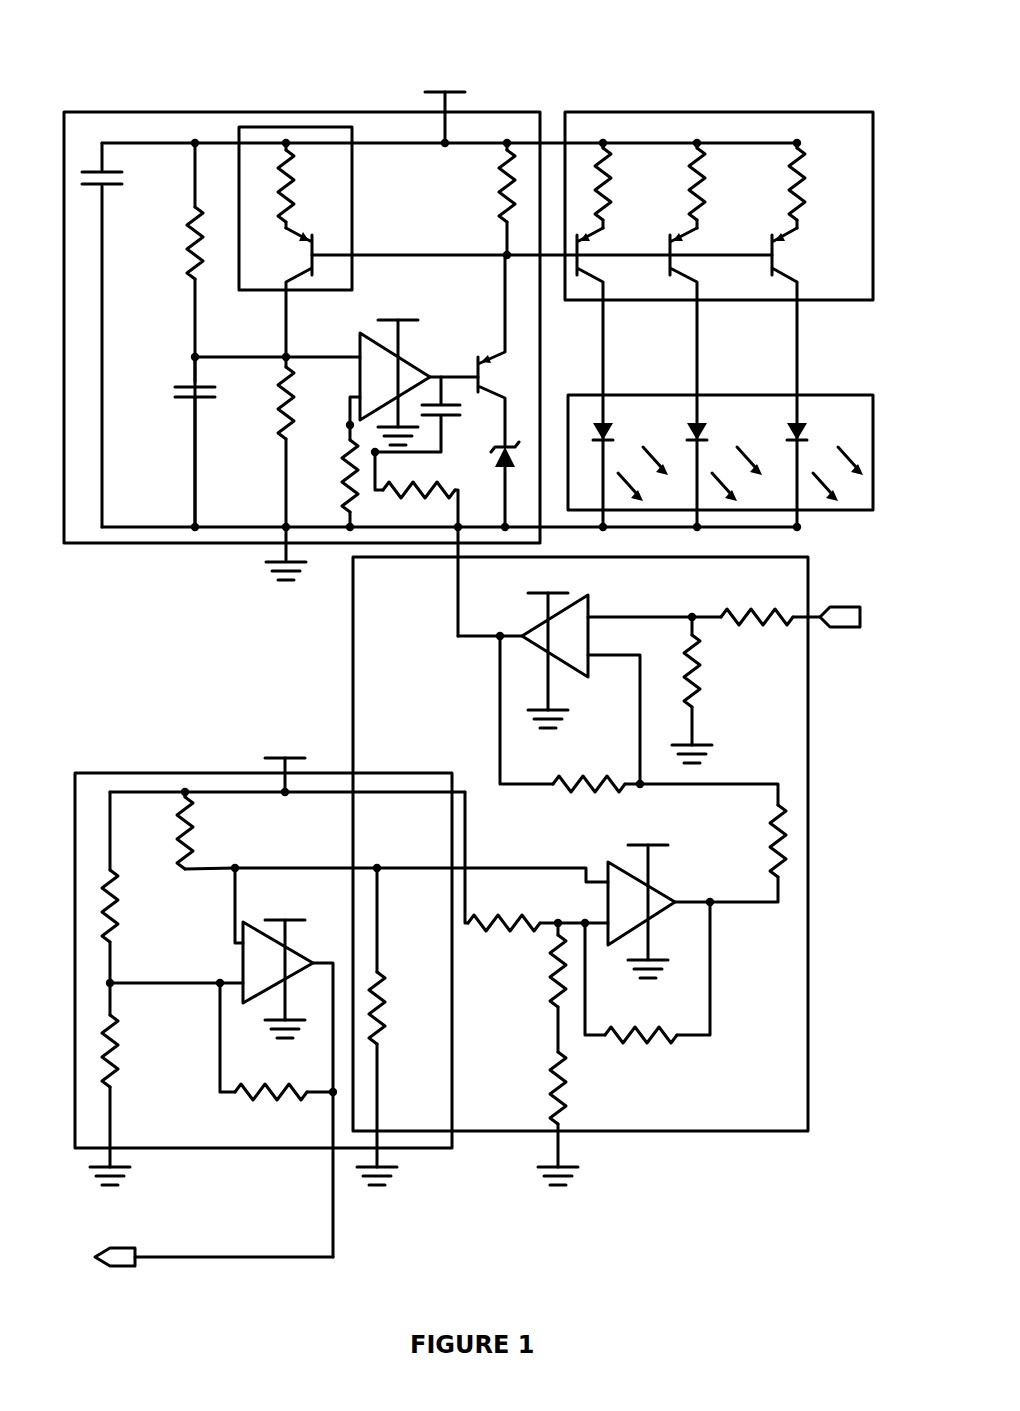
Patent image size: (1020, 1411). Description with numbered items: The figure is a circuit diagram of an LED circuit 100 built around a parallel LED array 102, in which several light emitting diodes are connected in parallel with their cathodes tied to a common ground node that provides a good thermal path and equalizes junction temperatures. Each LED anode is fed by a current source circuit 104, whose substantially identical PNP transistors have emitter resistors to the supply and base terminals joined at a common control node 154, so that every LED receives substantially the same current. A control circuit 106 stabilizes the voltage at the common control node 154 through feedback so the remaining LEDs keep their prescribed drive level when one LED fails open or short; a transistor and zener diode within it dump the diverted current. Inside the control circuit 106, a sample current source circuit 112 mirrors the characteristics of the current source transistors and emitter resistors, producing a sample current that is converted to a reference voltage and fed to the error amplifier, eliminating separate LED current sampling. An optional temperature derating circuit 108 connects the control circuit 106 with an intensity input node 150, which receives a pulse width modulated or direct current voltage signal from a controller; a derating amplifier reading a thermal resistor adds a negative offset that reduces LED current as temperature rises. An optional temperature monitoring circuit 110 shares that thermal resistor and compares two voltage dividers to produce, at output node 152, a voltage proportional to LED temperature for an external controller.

The LED circuit 100 is at (560, 57).
The parallel LED array 102 is at (812, 395).
The current source circuit 104 is at (697, 110).
The control circuit 106 is at (90, 543).
The temperature derating circuit 108 is at (350, 613).
The temperature monitoring circuit 110 is at (110, 773).
The sample current source circuit 112 is at (353, 157).
The input node 150 is at (835, 627).
The output node 152 is at (117, 1247).
The common control node 154 is at (507, 253).